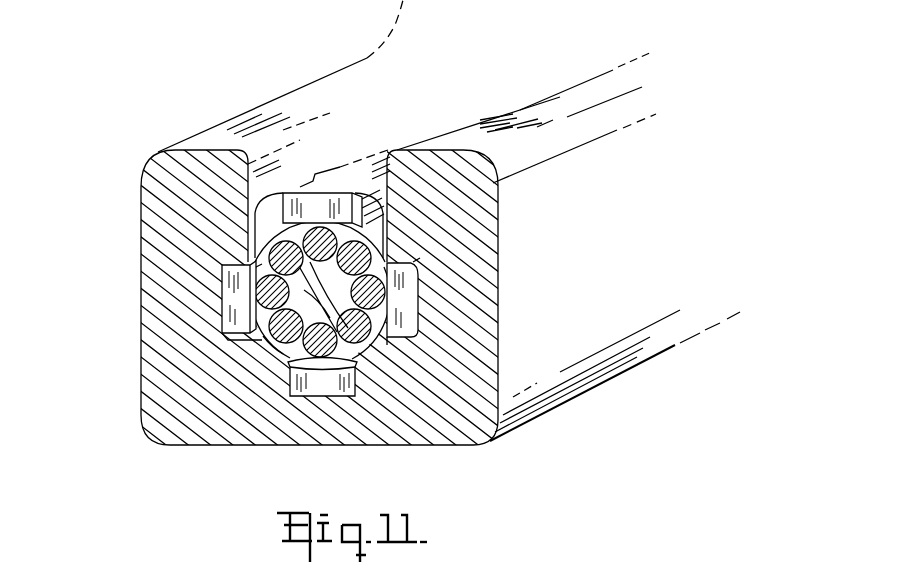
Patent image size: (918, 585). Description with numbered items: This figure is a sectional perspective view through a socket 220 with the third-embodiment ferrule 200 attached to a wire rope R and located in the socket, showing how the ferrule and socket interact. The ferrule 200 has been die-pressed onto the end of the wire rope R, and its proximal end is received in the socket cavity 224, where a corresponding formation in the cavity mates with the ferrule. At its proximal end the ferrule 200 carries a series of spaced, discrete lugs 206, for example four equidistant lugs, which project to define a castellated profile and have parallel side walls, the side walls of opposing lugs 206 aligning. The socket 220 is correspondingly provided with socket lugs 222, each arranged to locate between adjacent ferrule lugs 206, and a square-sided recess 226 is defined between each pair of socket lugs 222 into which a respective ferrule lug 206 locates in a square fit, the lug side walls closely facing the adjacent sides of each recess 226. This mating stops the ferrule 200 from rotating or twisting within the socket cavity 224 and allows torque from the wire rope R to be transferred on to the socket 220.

The ferrule 200 is at (337, 172).
The socket cavity 224 is at (378, 126).
The recess 226 is at (250, 262).
The lug 206 is at (232, 298).
The socket lug 222 is at (235, 338).
The wire rope R is at (262, 350).
The socket 220 is at (216, 455).